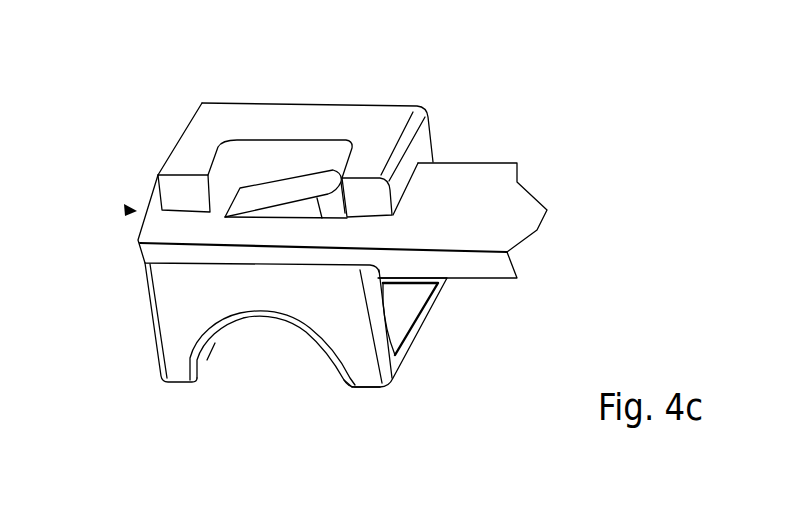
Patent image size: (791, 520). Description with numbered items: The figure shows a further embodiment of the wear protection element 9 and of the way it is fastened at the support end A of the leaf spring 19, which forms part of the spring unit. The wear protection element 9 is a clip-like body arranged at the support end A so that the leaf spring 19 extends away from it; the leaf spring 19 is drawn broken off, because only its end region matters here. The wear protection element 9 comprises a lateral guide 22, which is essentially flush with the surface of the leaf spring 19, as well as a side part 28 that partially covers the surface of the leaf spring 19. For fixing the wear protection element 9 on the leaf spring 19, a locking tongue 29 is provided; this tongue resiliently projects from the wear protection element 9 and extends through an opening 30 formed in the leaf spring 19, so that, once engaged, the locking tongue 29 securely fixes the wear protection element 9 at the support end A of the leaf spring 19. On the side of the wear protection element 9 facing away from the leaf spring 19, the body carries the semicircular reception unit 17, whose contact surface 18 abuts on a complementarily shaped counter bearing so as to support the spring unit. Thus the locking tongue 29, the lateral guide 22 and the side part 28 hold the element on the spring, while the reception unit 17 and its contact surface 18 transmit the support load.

The wear protection element 9 is at (182, 295).
The reception unit 17 is at (330, 348).
The contact surface 18 is at (205, 360).
The leaf spring 19 is at (497, 190).
The lateral guide 22 is at (345, 255).
The side part 28 is at (378, 150).
The locking tongue 29 is at (279, 196).
The opening 30 is at (350, 217).
The support end A is at (128, 210).